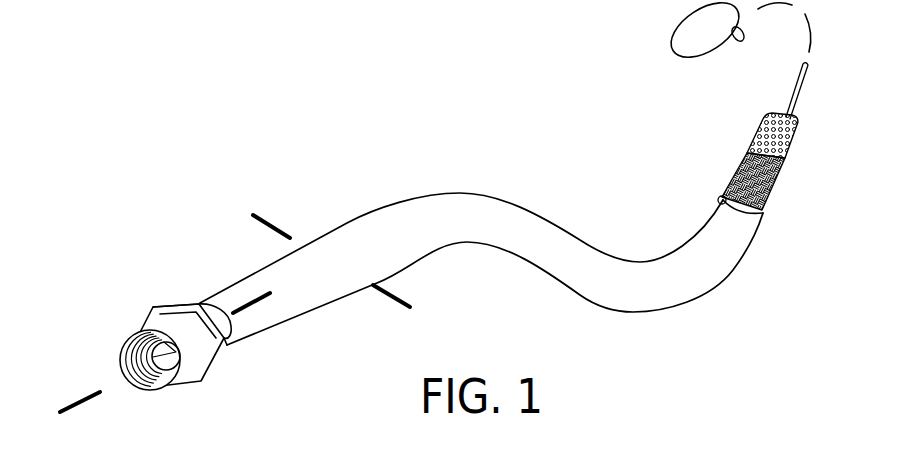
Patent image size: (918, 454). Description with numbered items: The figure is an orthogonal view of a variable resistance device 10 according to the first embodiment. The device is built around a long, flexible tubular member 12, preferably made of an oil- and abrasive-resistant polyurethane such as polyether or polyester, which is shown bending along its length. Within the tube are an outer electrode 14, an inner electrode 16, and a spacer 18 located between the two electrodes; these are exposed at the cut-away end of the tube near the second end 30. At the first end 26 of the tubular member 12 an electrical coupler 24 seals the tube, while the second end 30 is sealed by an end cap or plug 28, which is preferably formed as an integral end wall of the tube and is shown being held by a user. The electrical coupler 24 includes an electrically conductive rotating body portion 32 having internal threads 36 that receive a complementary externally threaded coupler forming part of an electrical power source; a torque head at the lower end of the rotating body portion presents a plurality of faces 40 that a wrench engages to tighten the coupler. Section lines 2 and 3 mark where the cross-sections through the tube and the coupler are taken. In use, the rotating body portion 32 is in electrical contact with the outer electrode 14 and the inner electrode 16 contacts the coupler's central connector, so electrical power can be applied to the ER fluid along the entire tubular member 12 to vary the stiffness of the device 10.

The variable resistance device 10 is at (375, 128).
The tubular member 12 is at (690, 277).
The outer electrode 14 is at (777, 185).
The inner electrode 16 is at (796, 97).
The spacer 18 is at (793, 137).
The electrical coupler 24 is at (167, 337).
The first end 26 is at (242, 335).
The plug 28 is at (700, 40).
The second end 30 is at (692, 15).
The rotating body portion 32 is at (190, 357).
The internal threads 36 is at (127, 343).
The faces 40 is at (177, 308).
The section line 2- 2 is at (263, 230).
The section line 3- 3 is at (255, 310).